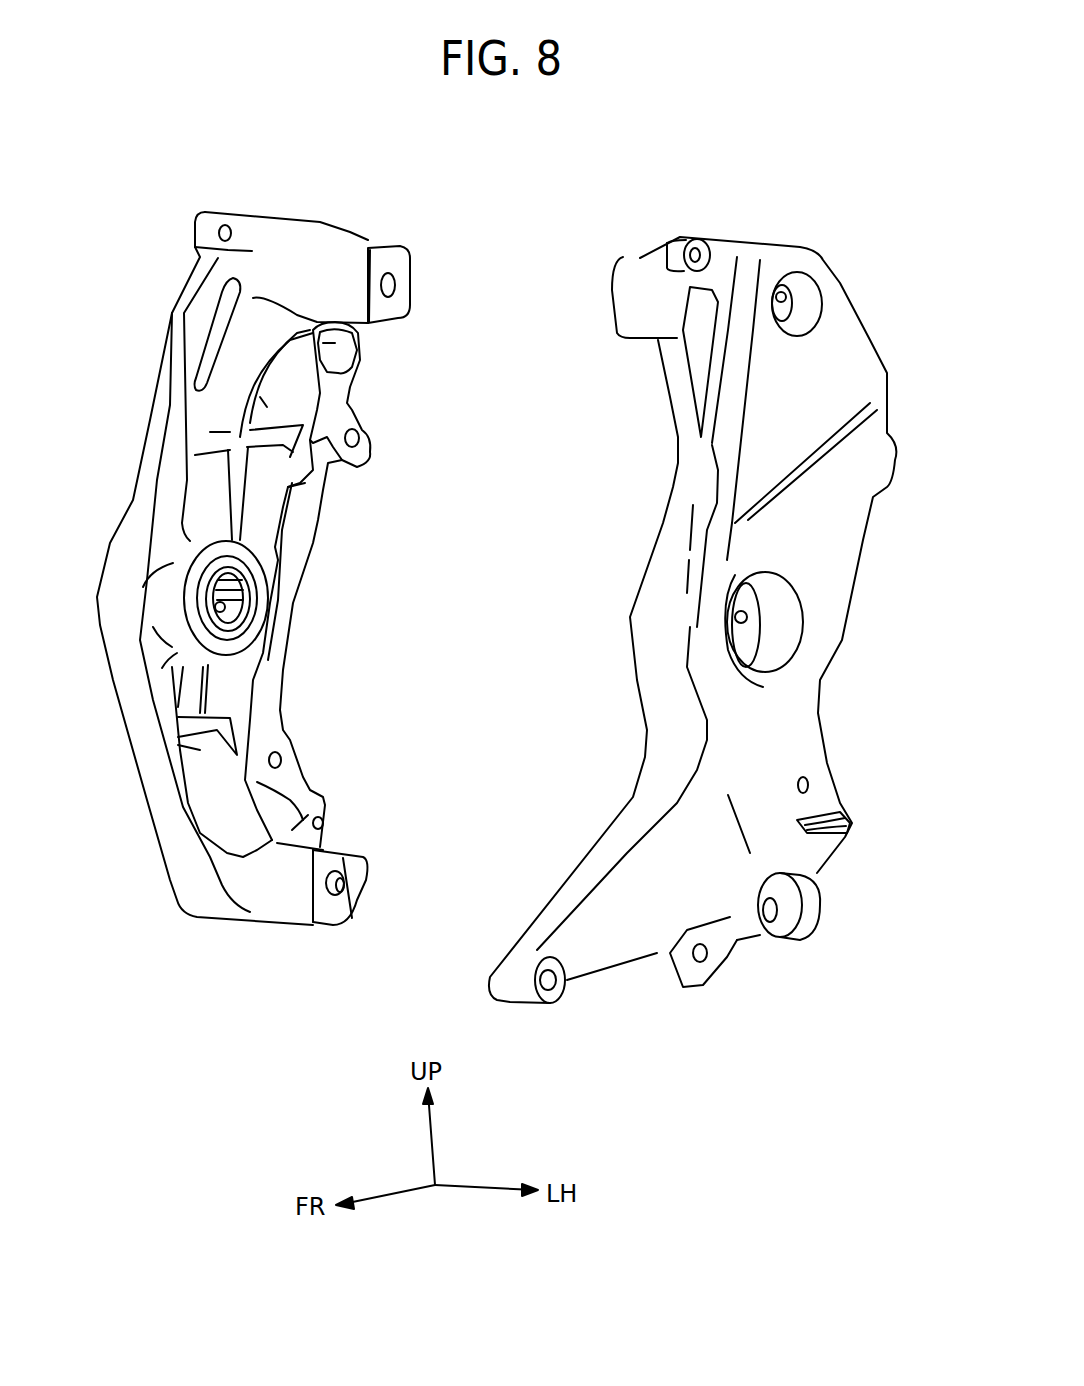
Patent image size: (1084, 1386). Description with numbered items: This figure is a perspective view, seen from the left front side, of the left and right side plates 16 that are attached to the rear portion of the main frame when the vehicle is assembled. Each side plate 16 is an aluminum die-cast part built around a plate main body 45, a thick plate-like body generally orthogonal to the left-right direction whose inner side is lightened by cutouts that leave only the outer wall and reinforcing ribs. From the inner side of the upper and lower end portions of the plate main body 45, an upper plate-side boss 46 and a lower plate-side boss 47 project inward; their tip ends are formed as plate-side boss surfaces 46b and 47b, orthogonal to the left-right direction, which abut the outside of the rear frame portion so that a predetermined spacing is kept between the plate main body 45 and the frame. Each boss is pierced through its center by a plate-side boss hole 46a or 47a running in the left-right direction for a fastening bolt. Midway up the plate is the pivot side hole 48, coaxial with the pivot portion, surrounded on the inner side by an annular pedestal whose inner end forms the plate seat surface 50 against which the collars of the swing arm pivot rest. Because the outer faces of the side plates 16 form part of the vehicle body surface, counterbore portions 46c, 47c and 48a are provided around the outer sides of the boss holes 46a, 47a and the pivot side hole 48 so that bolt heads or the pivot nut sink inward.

The side plate 16 is at (215, 180).
The plate main body 45 is at (147, 430).
The upper plate-side boss 46 is at (378, 230).
The plate-side boss hole 46a is at (396, 290).
The plate-side boss surface 46b is at (408, 300).
The counterbore portion 46c is at (810, 318).
The lower plate-side boss 47 is at (290, 935).
The plate-side boss hole 47a is at (340, 882).
The plate-side boss surface 47b is at (345, 908).
The counterbore portion 47c is at (796, 888).
The pivot side hole 48 is at (215, 618).
The counterbore portion 48a is at (778, 652).
The plate seat surface 50 is at (248, 590).